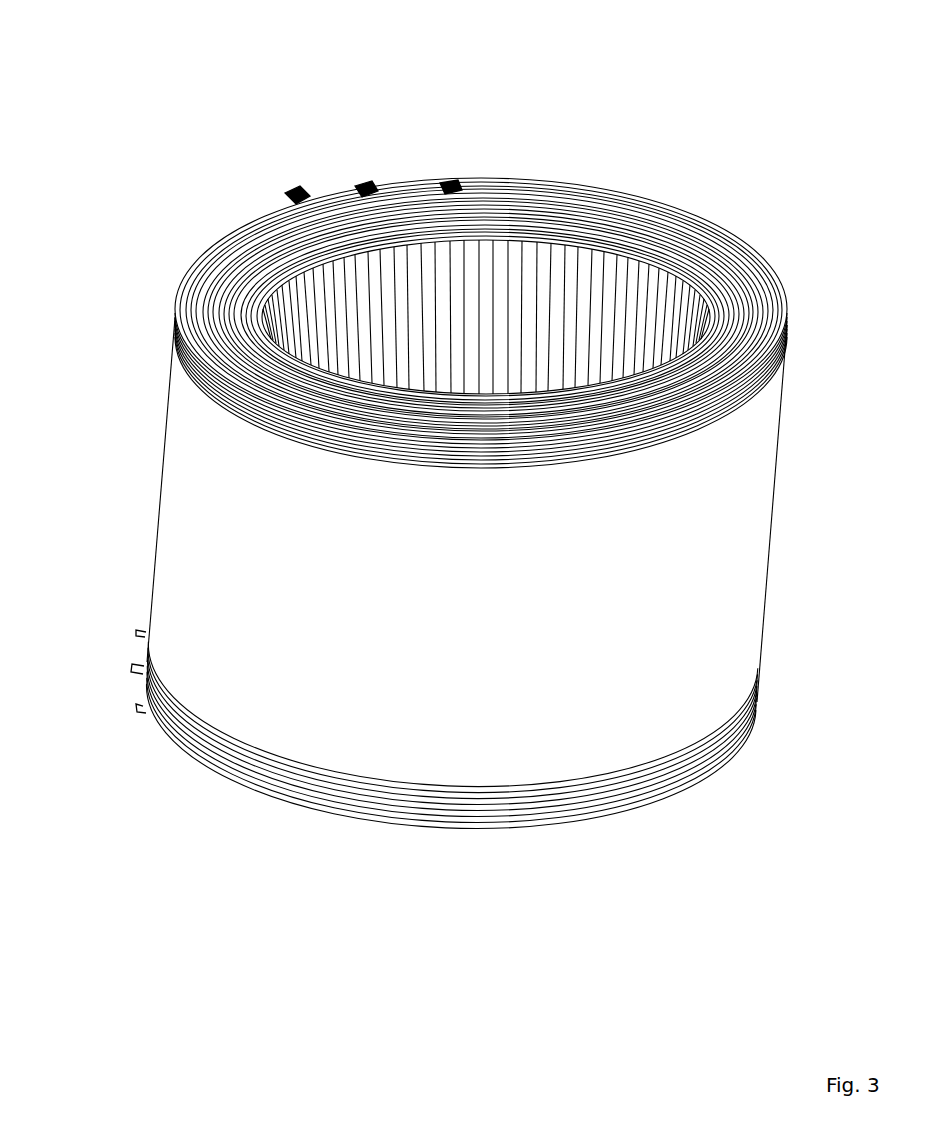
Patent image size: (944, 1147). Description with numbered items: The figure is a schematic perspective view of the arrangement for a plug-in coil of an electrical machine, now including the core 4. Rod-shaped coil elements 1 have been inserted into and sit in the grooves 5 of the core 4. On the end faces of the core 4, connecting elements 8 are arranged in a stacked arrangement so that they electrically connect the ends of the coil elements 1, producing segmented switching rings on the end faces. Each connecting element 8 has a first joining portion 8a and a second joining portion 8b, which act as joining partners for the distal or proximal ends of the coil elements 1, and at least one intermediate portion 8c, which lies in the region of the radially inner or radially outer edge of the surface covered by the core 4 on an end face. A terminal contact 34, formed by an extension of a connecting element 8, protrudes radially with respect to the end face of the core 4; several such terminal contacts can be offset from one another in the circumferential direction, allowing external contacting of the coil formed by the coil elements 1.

The coil element 1 is at (610, 283).
The core 4 is at (730, 600).
The groove 5 is at (495, 243).
The connecting element 8 is at (310, 190).
The first joining portion 8a is at (293, 190).
The second joining portion 8b is at (452, 186).
The intermediate portion 8c is at (364, 184).
The terminal contact 34 is at (142, 652).